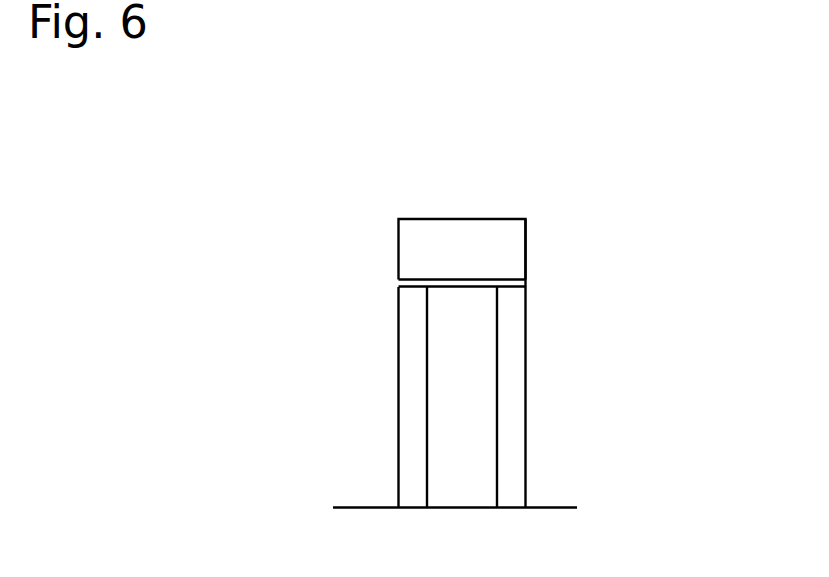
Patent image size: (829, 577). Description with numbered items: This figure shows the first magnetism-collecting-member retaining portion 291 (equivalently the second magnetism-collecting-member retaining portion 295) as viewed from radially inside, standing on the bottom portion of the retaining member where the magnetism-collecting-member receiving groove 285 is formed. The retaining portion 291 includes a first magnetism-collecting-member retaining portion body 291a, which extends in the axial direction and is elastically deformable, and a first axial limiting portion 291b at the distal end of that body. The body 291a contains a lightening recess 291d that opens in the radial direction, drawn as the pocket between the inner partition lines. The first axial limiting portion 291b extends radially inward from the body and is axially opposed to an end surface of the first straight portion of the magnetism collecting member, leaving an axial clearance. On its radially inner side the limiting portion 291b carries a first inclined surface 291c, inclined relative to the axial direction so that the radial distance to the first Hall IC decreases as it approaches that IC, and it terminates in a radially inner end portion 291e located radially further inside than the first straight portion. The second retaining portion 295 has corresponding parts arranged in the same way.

The magnetism-collecting-member receiving groove 285 is at (553, 507).
The first magnetism-collecting-member retaining portion 291 is at (493, 317).
The first magnetism-collecting-member retaining portion body 291a is at (526, 347).
The first axial limiting portion 291b is at (526, 246).
The first inclined surface 291c is at (423, 251).
The lightening recess 291d is at (432, 436).
The radially inner end portion 291e is at (467, 282).
The second magnetism-collecting-member retaining portion 295 is at (493, 317).